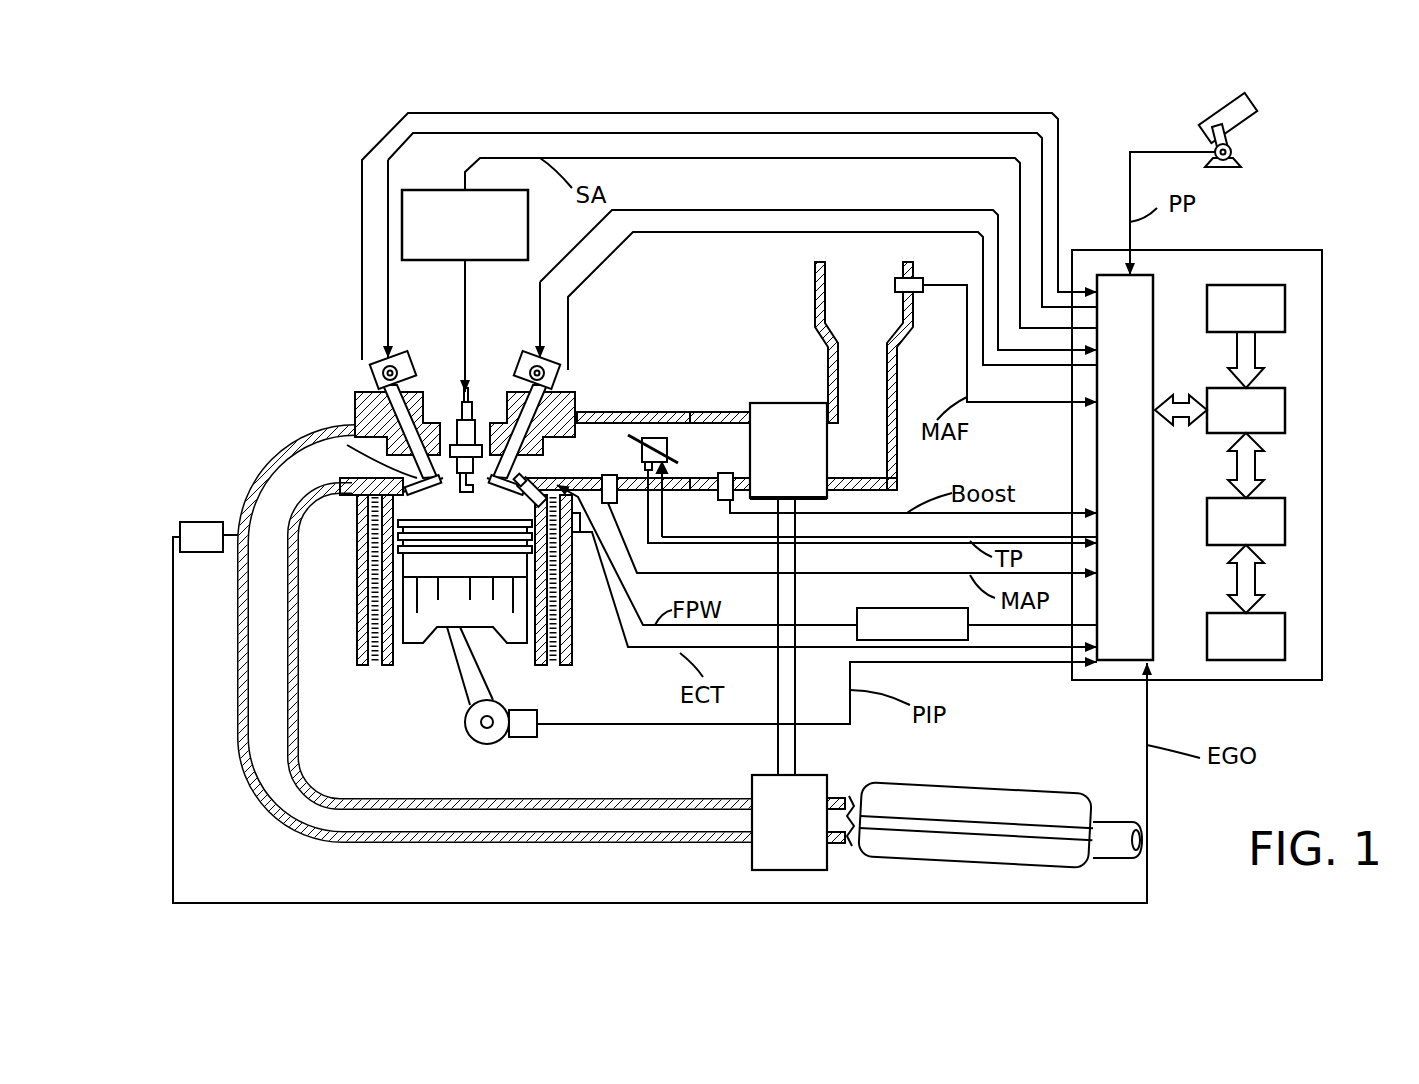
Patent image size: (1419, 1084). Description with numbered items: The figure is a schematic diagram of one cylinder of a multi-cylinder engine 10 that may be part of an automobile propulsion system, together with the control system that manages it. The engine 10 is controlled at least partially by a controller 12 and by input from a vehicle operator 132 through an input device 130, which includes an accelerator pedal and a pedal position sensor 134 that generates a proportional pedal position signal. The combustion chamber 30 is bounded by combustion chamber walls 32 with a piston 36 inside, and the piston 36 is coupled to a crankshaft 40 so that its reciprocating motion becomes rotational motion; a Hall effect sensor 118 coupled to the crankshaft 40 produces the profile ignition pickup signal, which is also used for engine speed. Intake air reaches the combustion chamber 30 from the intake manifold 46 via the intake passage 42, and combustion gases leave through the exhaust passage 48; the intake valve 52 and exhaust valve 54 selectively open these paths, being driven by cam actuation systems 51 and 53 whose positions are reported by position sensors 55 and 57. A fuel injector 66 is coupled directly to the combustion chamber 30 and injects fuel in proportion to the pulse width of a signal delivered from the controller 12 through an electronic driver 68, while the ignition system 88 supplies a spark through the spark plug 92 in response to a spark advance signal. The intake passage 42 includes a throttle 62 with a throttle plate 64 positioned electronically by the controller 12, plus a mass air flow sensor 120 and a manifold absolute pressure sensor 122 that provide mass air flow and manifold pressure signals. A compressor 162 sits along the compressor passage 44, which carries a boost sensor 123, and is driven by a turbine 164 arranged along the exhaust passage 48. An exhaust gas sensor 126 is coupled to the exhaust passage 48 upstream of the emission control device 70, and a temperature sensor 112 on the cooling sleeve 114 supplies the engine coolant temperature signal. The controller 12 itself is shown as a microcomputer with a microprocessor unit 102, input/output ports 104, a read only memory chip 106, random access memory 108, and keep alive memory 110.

The engine 10 is at (285, 345).
The controller 12 is at (1245, 453).
The combustion chamber 30 is at (463, 502).
The combustion chamber walls 32 is at (403, 648).
The piston 36 is at (447, 610).
The crankshaft 40 is at (477, 745).
The intake passage 42 is at (848, 314).
The compressor passage 44 is at (698, 465).
The intake manifold 46 is at (622, 465).
The exhaust passage 48 is at (303, 472).
The cam actuation system 51 is at (527, 365).
The intake valve 52 is at (485, 436).
The cam actuation system 53 is at (403, 362).
The exhaust valve 54 is at (358, 437).
The position sensor 55 is at (558, 378).
The position sensor 57 is at (375, 378).
The throttle 62 is at (655, 437).
The throttle plate 64 is at (630, 433).
The fuel injector 66 is at (529, 490).
The electronic driver 68 is at (890, 608).
The emission control device 70 is at (1047, 800).
The ignition system 88 is at (418, 190).
The spark plug 92 is at (462, 430).
The microprocessor unit 102 is at (1287, 410).
The input/output ports 104 is at (1155, 285).
The read only memory chip 106 is at (1287, 305).
The random access memory 108 is at (1287, 520).
The keep alive memory 110 is at (1287, 635).
The temperature sensor 112 is at (553, 613).
The cooling sleeve 114 is at (577, 540).
The Hall effect sensor 118 is at (528, 740).
The mass air flow sensor 120 is at (917, 276).
The manifold absolute pressure sensor 122 is at (609, 497).
The boost sensor 123 is at (723, 493).
The exhaust gas sensor 126 is at (180, 525).
The input device 130 is at (1262, 173).
The vehicle operator 132 is at (1253, 110).
The pedal position sensor 134 is at (1237, 153).
The compressor 162 is at (770, 403).
The turbine 164 is at (752, 847).